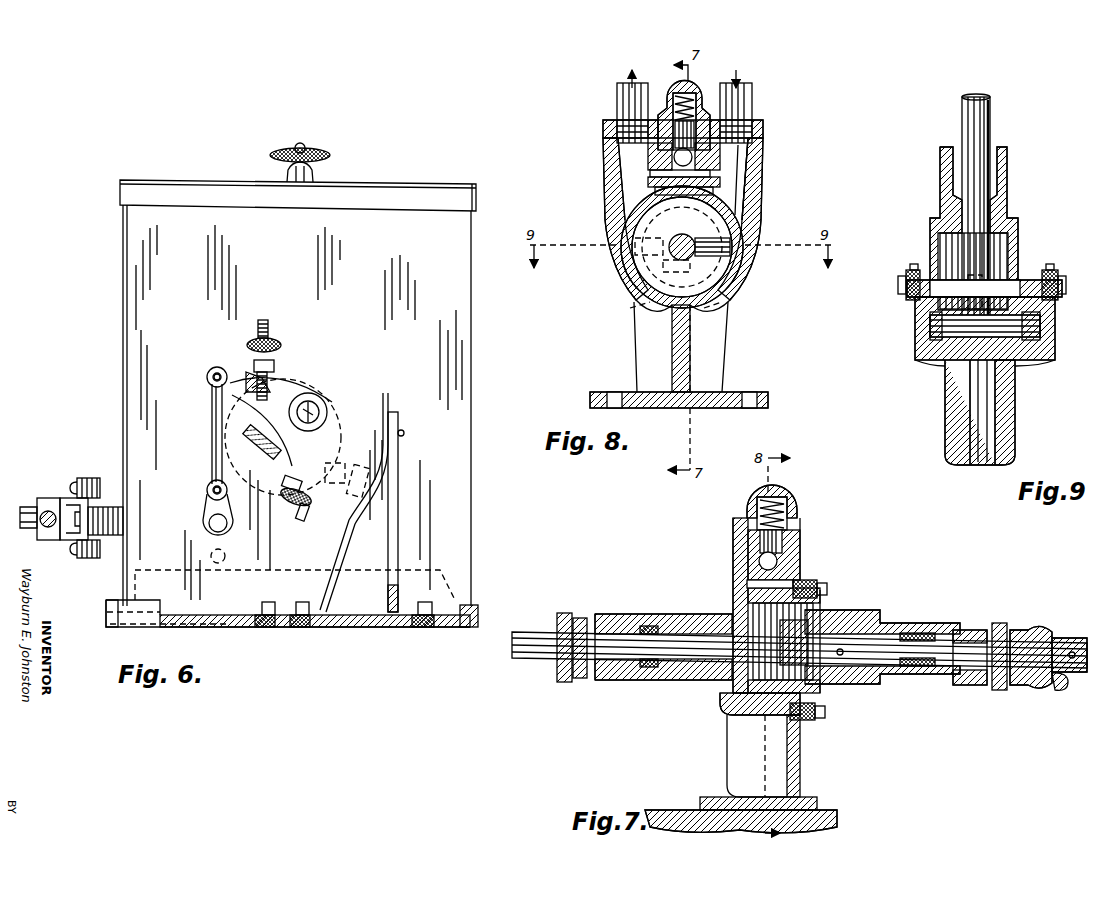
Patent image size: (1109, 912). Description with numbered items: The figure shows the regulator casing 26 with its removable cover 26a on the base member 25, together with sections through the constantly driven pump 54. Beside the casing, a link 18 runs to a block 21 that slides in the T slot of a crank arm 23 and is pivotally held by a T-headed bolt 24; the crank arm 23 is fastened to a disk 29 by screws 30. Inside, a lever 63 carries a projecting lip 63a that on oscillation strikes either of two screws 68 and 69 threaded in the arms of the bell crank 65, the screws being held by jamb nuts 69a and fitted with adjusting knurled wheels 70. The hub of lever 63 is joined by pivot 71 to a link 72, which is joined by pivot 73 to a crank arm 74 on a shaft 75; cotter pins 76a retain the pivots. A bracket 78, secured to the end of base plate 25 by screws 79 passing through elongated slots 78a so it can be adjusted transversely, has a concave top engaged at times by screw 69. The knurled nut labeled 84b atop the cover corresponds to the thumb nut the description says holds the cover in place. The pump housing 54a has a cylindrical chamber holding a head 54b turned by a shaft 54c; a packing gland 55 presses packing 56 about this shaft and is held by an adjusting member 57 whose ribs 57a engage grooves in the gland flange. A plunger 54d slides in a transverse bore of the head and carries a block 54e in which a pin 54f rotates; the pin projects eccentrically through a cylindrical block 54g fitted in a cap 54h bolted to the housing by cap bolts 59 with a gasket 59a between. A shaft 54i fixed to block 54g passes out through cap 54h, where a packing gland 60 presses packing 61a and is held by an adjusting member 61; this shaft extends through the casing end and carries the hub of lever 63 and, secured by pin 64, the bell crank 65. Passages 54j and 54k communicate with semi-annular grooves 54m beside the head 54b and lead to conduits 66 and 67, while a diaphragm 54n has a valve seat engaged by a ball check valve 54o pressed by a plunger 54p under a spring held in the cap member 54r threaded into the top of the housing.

In FIG. 6, the link 18 is at (42, 524).
In FIG. 6, the block 21 is at (48, 498).
In FIG. 6, the crank arm 23 is at (66, 498).
In FIG. 6, the T-headed bolt 24 is at (22, 510).
In FIG. 6, the base member 25 is at (478, 620).
In FIG. 7, the base member 25 is at (838, 812).
In FIG. 6, the sheet metal casing 26 is at (471, 248).
In FIG. 6, the removable cover 26a is at (430, 183).
In FIG. 6, the disk 29 is at (96, 558).
In FIG. 6, the screws 30 is at (76, 558).
In FIG. 8, the pump 54 is at (732, 322).
In FIG. 7, the pump 54 is at (745, 725).
In FIG. 8, the housing 54a is at (640, 302).
In FIG. 8, the head 54b is at (730, 304).
In FIG. 9, the head 54b is at (1040, 356).
In FIG. 7, the head 54b is at (738, 600).
In FIG. 8, the shaft 54c is at (679, 241).
In FIG. 9, the shaft 54c is at (985, 432).
In FIG. 7, the shaft 54c is at (680, 614).
In FIG. 8, the plunger 54d is at (740, 228).
In FIG. 9, the plunger 54d is at (1050, 332).
In FIG. 8, the block 54e is at (660, 318).
In FIG. 9, the block 54e is at (936, 326).
In FIG. 7, the block 54e is at (735, 700).
In FIG. 9, the pin 54f is at (928, 296).
In FIG. 7, the pin 54f is at (733, 720).
In FIG. 8, the cylindrical block 54g is at (690, 96).
In FIG. 9, the cylindrical block 54g is at (985, 256).
In FIG. 7, the cylindrical block 54g is at (760, 500).
In FIG. 9, the cap 54h is at (1008, 202).
In FIG. 7, the cap 54h is at (845, 688).
In FIG. 6, the shaft 54i is at (318, 408).
In FIG. 9, the shaft 54i is at (990, 118).
In FIG. 7, the shaft 54i is at (870, 640).
In FIG. 8, the passage 54j is at (742, 152).
In FIG. 8, the passage 54k is at (628, 150).
In FIG. 8, the semi-annular grooves 54m is at (628, 272).
In FIG. 8, the diaphragm 54n is at (655, 180).
In FIG. 7, the diaphragm 54n is at (800, 576).
In FIG. 8, the check valve 54o is at (674, 158).
In FIG. 7, the check valve 54o is at (790, 556).
In FIG. 8, the plunger 54p is at (696, 130).
In FIG. 7, the plunger 54p is at (800, 540).
In FIG. 8, the cap member 54r is at (678, 96).
In FIG. 7, the cap member 54r is at (782, 497).
In FIG. 7, the packing gland 55 is at (606, 614).
In FIG. 7, the packing 56 is at (650, 680).
In FIG. 7, the holding and adjusting member 57 is at (564, 682).
In FIG. 7, the ribs 57a is at (581, 678).
In FIG. 9, the cap bolts 59 is at (1054, 278).
In FIG. 7, the cap bolts 59 is at (817, 588).
In FIG. 9, the gasket 59a is at (1062, 295).
In FIG. 7, the gasket 59a is at (816, 718).
In FIG. 7, the packing gland 60 is at (968, 630).
In FIG. 7, the holding and adjusting member 61 is at (998, 690).
In FIG. 7, the packing 61a is at (925, 634).
In FIG. 6, the lever 63 is at (246, 373).
In FIG. 7, the lever 63 is at (1018, 630).
In FIG. 6, the projecting plate or lip 63a is at (250, 446).
In FIG. 7, the pin 64 is at (1082, 645).
In FIG. 6, the bell crank 65 is at (296, 386).
In FIG. 7, the bell crank 65 is at (1060, 690).
In FIG. 8, the conduit 66 is at (736, 98).
In FIG. 8, the conduit 67 is at (630, 95).
In FIG. 6, the screw 68 is at (265, 322).
In FIG. 6, the screw 69 is at (306, 517).
In FIG. 6, the jamb nuts 69a is at (272, 366).
In FIG. 6, the adjusting knurled wheels 70 is at (276, 343).
In FIG. 6, the pivot 71 is at (208, 380).
In FIG. 6, the link 72 is at (212, 440).
In FIG. 6, the pivot 73 is at (207, 494).
In FIG. 6, the crank arm 74 is at (212, 510).
In FIG. 6, the shaft 75 is at (228, 523).
In FIG. 6, the cotter pins 76a is at (207, 374).
In FIG. 6, the bracket 78 is at (340, 627).
In FIG. 6, the elongated slots 78a is at (270, 627).
In FIG. 6, the screws 79 is at (276, 607).
In FIG. 6, the knob 84b is at (330, 156).